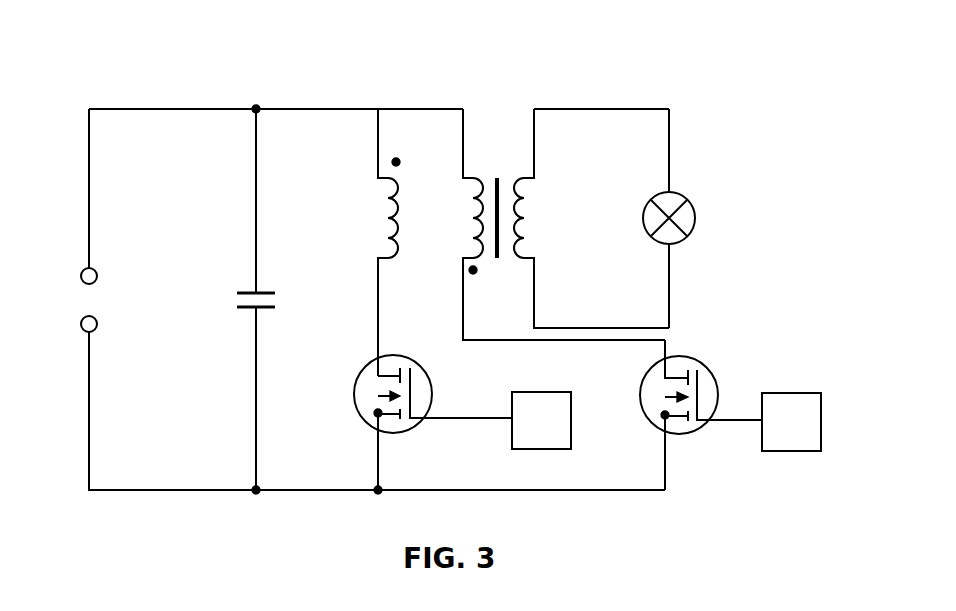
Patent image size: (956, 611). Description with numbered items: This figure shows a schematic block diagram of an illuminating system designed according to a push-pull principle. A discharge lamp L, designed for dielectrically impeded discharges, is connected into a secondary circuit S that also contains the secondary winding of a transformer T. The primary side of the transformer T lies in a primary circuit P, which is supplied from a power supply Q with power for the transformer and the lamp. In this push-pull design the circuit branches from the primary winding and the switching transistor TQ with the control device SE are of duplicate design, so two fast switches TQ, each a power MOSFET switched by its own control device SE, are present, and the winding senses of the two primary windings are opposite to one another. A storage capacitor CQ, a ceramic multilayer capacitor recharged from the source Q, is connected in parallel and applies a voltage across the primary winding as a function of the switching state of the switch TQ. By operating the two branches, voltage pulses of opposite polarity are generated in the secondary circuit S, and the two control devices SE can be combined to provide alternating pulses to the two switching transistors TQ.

The primary circuit P is at (258, 87).
The secondary circuit S is at (595, 87).
The transformer T is at (490, 109).
The power supply Q is at (73, 300).
The storage capacitor CQ is at (277, 304).
The discharge lamp L is at (686, 218).
The fast switch TQ is at (558, 415).
The control device SE is at (666, 421).